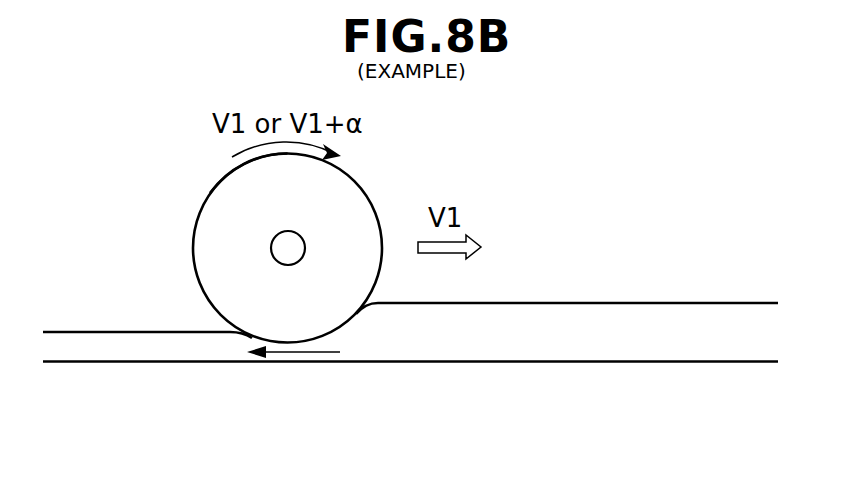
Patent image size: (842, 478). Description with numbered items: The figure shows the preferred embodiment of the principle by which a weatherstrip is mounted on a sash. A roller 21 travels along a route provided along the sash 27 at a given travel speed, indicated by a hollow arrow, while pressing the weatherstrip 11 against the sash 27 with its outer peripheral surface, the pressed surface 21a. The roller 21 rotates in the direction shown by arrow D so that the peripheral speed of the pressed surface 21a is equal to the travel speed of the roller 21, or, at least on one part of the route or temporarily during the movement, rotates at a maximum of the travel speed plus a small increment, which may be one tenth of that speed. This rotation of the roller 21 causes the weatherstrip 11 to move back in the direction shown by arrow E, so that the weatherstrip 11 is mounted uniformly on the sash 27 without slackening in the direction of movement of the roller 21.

The weatherstrip 11 is at (621, 315).
The roller 21 is at (194, 238).
The pressed surface 21a is at (212, 192).
The sash 27 is at (136, 354).
The arrow D is at (233, 158).
The arrow E is at (302, 352).